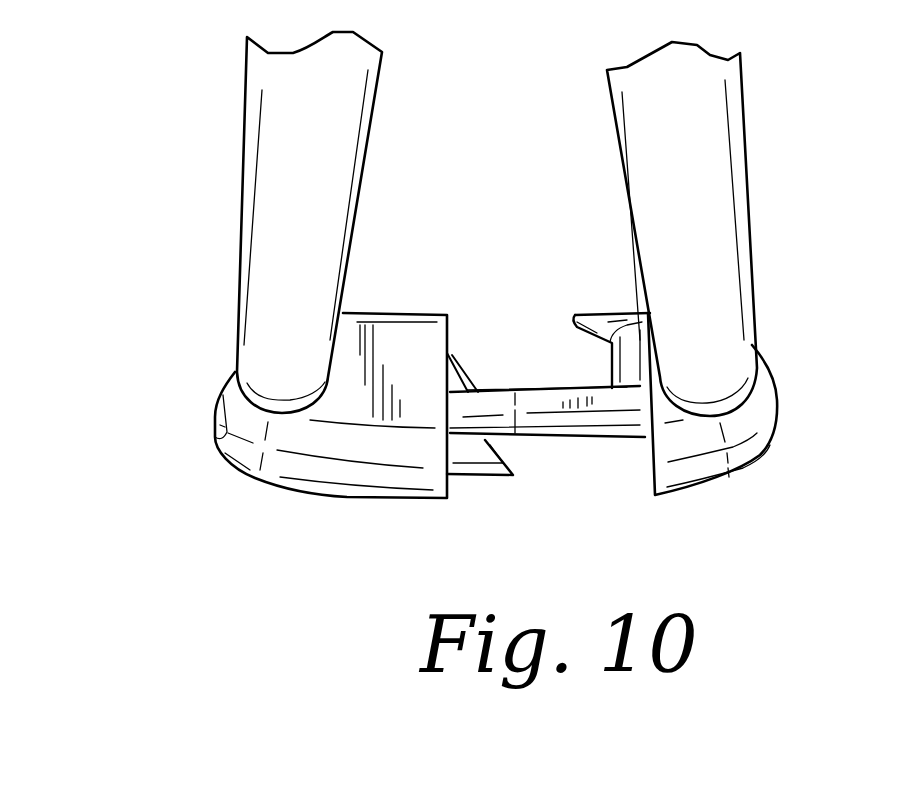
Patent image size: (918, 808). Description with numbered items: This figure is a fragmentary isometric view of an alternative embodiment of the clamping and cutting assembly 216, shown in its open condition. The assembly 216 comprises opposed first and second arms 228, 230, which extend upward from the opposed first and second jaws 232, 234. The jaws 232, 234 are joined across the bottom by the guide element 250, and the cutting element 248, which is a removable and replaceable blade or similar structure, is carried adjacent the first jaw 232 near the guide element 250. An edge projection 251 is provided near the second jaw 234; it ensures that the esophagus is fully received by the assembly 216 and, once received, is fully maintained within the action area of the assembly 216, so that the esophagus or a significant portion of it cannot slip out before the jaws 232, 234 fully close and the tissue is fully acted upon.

The clamping and cutting assembly 216 is at (140, 168).
The first arm 228 is at (373, 208).
The second arm 230 is at (608, 155).
The first jaw 232 is at (355, 478).
The second jaw 234 is at (685, 472).
The cutting element 248 is at (497, 480).
The guide element 250 is at (572, 445).
The edge projection 251 is at (570, 317).